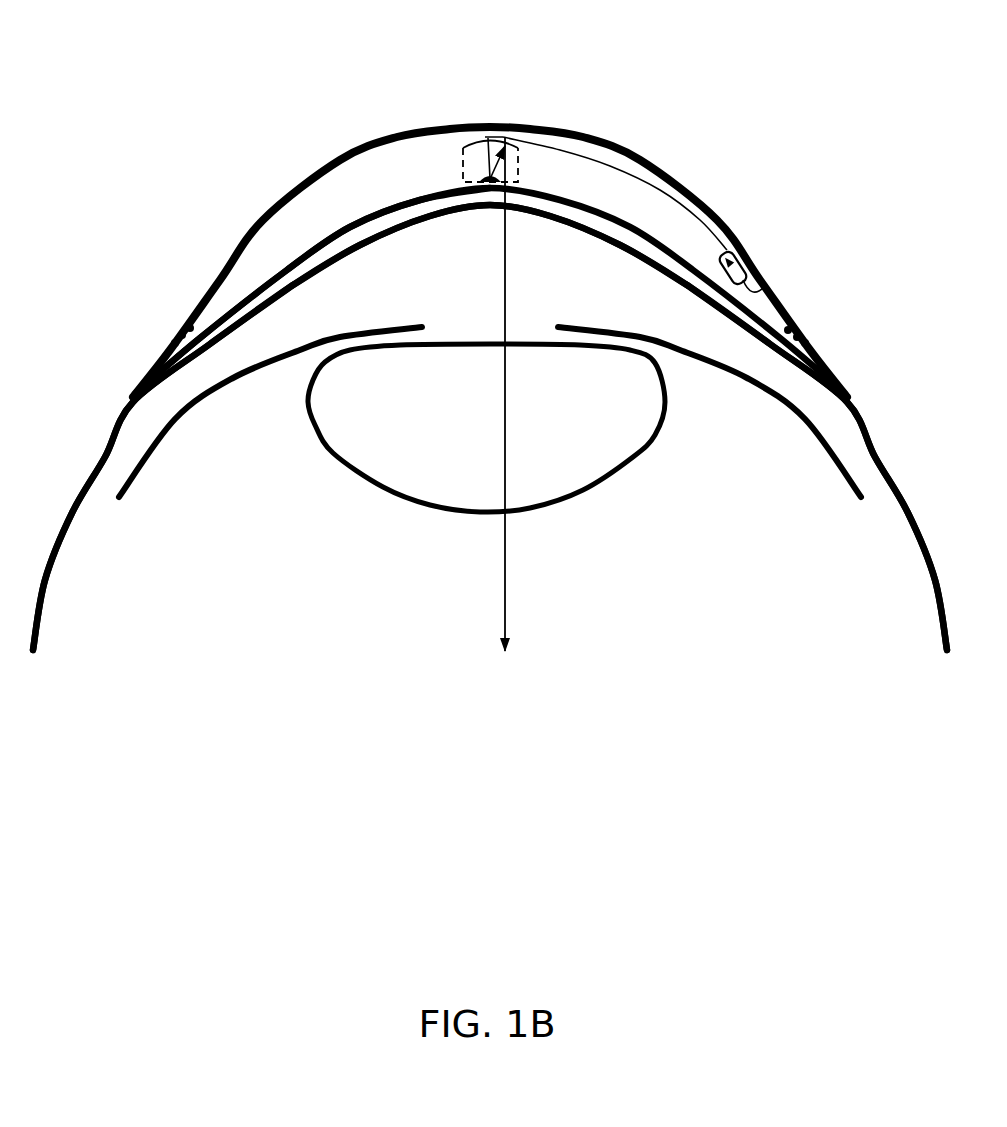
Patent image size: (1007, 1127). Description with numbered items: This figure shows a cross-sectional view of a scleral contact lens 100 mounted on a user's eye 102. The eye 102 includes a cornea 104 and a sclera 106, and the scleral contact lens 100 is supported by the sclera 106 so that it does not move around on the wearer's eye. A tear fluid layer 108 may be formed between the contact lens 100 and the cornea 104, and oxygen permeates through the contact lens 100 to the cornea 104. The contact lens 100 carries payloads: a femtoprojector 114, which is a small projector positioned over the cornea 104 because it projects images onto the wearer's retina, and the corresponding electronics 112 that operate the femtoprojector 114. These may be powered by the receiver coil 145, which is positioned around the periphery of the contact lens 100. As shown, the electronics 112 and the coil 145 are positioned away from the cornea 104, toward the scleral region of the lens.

The scleral contact lens 100 is at (364, 142).
The eye 102 is at (490, 419).
The cornea 104 is at (413, 224).
The sclera 106 is at (166, 393).
The tear fluid layer 108 is at (340, 236).
The electronics 112 is at (742, 240).
The femtoprojector 114 is at (524, 161).
The receiver coil 145 is at (810, 329).